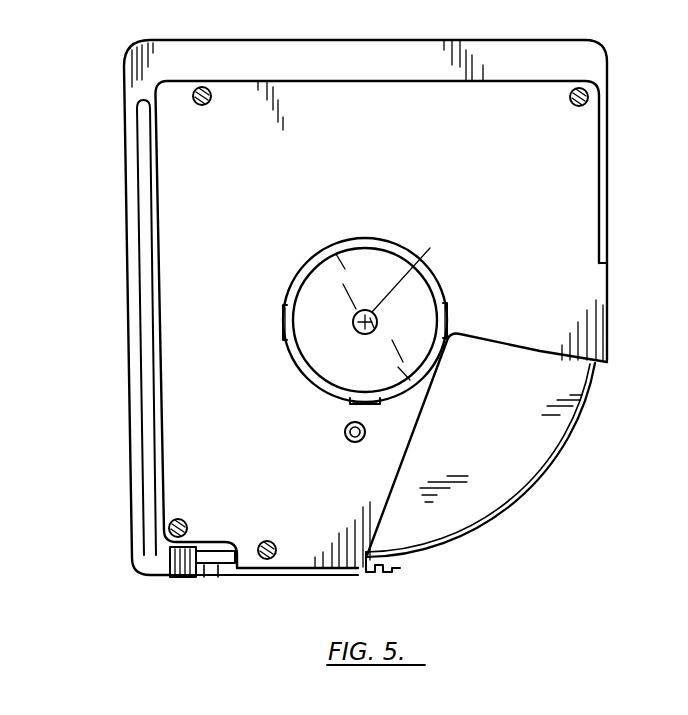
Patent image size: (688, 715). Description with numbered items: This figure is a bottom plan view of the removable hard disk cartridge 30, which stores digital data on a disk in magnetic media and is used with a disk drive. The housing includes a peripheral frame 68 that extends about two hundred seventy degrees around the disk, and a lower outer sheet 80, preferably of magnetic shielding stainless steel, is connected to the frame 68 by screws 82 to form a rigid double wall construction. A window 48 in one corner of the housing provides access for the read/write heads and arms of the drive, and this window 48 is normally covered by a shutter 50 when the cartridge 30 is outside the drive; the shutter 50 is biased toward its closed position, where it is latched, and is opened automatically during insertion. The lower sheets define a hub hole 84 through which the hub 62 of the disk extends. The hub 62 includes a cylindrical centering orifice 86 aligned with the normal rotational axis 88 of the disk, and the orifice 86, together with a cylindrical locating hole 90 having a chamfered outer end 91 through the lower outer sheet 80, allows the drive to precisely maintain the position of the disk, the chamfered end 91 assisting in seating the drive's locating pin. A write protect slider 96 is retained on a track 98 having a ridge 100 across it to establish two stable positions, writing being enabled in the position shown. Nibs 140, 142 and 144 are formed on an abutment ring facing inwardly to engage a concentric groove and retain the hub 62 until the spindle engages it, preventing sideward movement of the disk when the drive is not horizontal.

The hard disk cartridge 30 is at (118, 262).
The window 48 is at (593, 408).
The shutter 50 is at (493, 533).
The hub 62 is at (303, 290).
The peripheral frame 68 is at (595, 67).
The lower outer sheet 80 is at (581, 203).
The screws 82 is at (198, 84).
The hub hole 84 is at (380, 243).
The cylindrical centering orifice 86 is at (355, 332).
The rotational axis 88 is at (410, 269).
The cylindrical locating hole 90 is at (343, 443).
The chamfered outer end 91 is at (345, 430).
The write protect slider 96 is at (173, 580).
The track 98 is at (220, 564).
The ridge 100 is at (207, 578).
The nib 140 is at (348, 407).
The nib 142 is at (283, 322).
The nib 144 is at (443, 320).